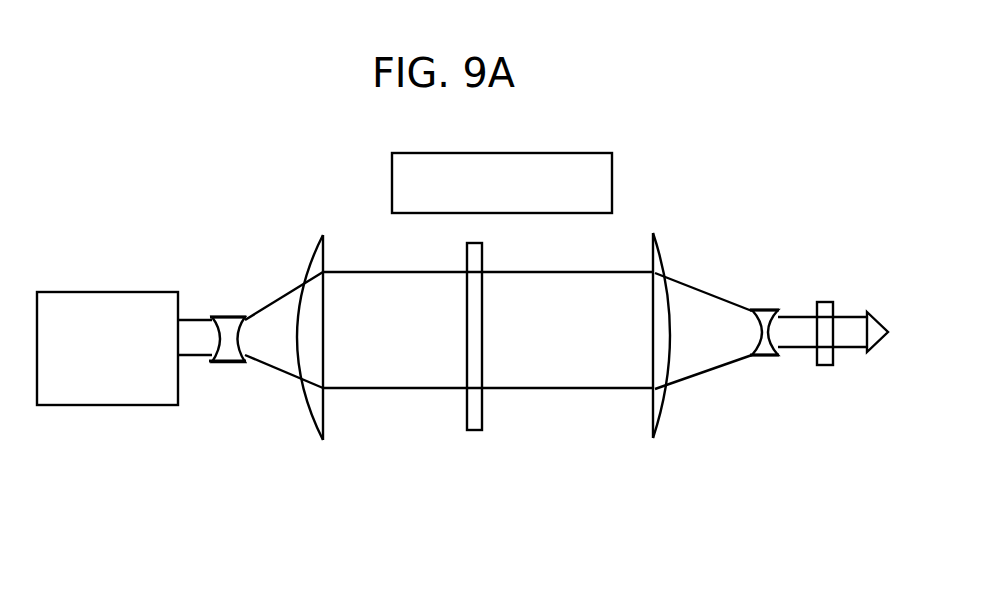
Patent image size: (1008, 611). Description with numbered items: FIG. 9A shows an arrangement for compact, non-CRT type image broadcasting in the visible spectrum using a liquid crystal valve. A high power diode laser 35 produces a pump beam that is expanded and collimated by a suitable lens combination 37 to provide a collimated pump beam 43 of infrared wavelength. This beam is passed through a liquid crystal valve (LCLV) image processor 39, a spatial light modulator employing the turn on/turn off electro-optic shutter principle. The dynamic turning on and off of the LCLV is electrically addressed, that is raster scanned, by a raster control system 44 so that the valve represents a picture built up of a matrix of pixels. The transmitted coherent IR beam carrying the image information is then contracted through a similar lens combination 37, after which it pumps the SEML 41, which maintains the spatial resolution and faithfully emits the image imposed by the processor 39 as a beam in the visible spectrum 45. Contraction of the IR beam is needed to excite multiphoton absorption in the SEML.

The high power diode laser 35 is at (148, 405).
The lens combination 37 is at (234, 362).
The liquid crystal valve (LCLV) image processor 39 is at (486, 259).
The SEML 41 is at (820, 296).
The collimated pump beam 43 is at (395, 352).
The rastor control system 44 is at (612, 187).
The visible spectrum 45 is at (855, 352).